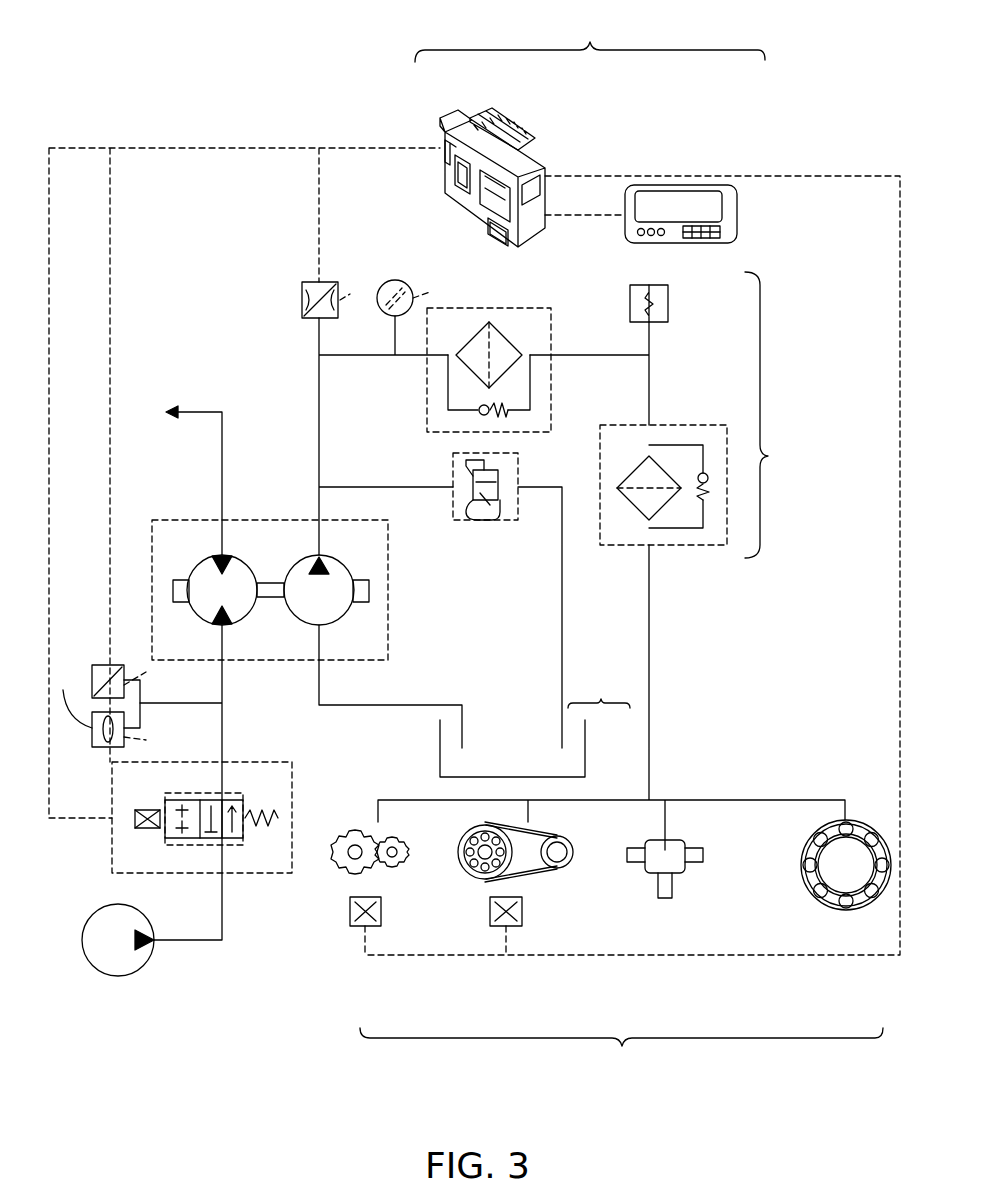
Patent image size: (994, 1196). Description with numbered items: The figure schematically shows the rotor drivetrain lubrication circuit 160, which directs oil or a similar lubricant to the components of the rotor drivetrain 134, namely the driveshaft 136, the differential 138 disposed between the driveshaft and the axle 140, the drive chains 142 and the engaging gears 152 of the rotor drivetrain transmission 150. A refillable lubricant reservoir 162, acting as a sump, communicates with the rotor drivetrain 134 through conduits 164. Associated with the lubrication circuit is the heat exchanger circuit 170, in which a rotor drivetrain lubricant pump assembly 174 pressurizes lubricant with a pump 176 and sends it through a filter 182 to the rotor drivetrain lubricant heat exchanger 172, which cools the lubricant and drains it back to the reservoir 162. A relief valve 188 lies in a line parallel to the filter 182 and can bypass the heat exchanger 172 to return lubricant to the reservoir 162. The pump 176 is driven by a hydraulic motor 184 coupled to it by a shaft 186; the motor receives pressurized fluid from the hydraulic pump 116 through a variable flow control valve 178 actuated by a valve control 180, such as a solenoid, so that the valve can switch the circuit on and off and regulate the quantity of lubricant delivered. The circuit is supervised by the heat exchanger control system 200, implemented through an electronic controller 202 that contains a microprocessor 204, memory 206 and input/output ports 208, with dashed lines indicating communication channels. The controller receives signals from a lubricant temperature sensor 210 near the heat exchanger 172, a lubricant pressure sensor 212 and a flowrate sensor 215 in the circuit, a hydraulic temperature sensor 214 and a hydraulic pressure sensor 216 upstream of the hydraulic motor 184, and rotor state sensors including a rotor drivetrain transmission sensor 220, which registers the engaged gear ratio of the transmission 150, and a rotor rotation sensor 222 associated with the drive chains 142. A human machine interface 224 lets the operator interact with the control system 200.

The heat exchanger control system 200 is at (590, 34).
The electronic controller 202 is at (510, 140).
The microprocessor 204 is at (470, 200).
The memory 206 is at (538, 182).
The input/output ports 208 is at (500, 232).
The human machine interface 224 is at (718, 185).
The lubricant pressure sensor 212 is at (300, 298).
The flowrate sensor 215 is at (388, 280).
The filter 182 is at (500, 330).
The lubricant temperature sensor 210 is at (670, 298).
The rotor drivetrain lubricant heat exchanger 172 is at (635, 455).
The heat exchanger circuit 170 is at (788, 415).
The relief valve 188 is at (468, 508).
The rotor drivetrain lubricant pump assembly 174 is at (390, 600).
The hydraulic motor 184 is at (202, 608).
The pump 176 is at (346, 612).
The shaft 186 is at (260, 600).
The hydraulic pressure sensor 216 is at (98, 665).
The hydraulic temperature sensor 214 is at (96, 748).
The variable flow control valve 178 is at (232, 800).
The valve control 180 is at (135, 818).
The hydraulic pump 116 is at (125, 958).
The rotor drivetrain lubrication circuit 160 is at (599, 689).
The lubricant reservoir 162 is at (438, 766).
The conduits 164 is at (762, 800).
The engaging gears 152 is at (392, 866).
The rotor drivetrain transmission 150 is at (392, 852).
The rotor drivetrain transmission sensor 220 is at (352, 928).
The rotor rotation sensor 222 is at (500, 928).
The drive chains 142 is at (530, 876).
The driveshaft 136 is at (660, 890).
The differential 138 is at (680, 878).
The axle 140 is at (700, 860).
The rotor drivetrain 134 is at (621, 1055).